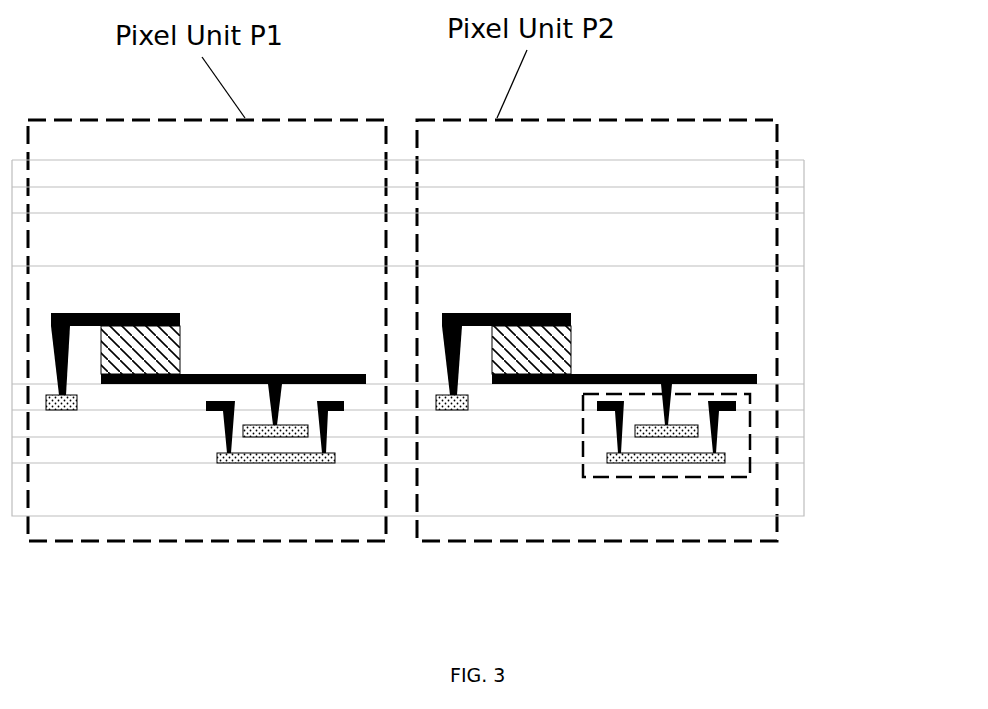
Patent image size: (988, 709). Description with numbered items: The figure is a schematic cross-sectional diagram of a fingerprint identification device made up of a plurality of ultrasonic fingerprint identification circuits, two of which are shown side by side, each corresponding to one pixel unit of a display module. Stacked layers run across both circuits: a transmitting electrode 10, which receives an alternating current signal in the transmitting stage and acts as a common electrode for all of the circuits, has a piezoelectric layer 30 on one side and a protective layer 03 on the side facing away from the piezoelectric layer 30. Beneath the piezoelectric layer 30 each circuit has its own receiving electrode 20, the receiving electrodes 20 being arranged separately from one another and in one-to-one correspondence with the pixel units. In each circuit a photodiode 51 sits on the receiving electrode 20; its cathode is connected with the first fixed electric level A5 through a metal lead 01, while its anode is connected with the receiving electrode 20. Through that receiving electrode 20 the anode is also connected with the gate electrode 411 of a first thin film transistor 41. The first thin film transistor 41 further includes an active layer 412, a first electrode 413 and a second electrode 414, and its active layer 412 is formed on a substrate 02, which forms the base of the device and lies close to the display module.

The protective layer 03 is at (788, 173).
The transmitting electrode 10 is at (788, 200).
The piezoelectric layer 30 is at (789, 238).
The substrate 02 is at (792, 499).
The metal lead 01 is at (503, 313).
The photodiode 51 is at (552, 355).
The receiving electrode 20 is at (695, 373).
The first fixed electric level A5 is at (452, 403).
The first thin film transistor 41 is at (750, 425).
The gate electrode 411 is at (683, 433).
The active layer 412 is at (640, 460).
The first electrode 413 is at (615, 427).
The second electrode 414 is at (718, 423).